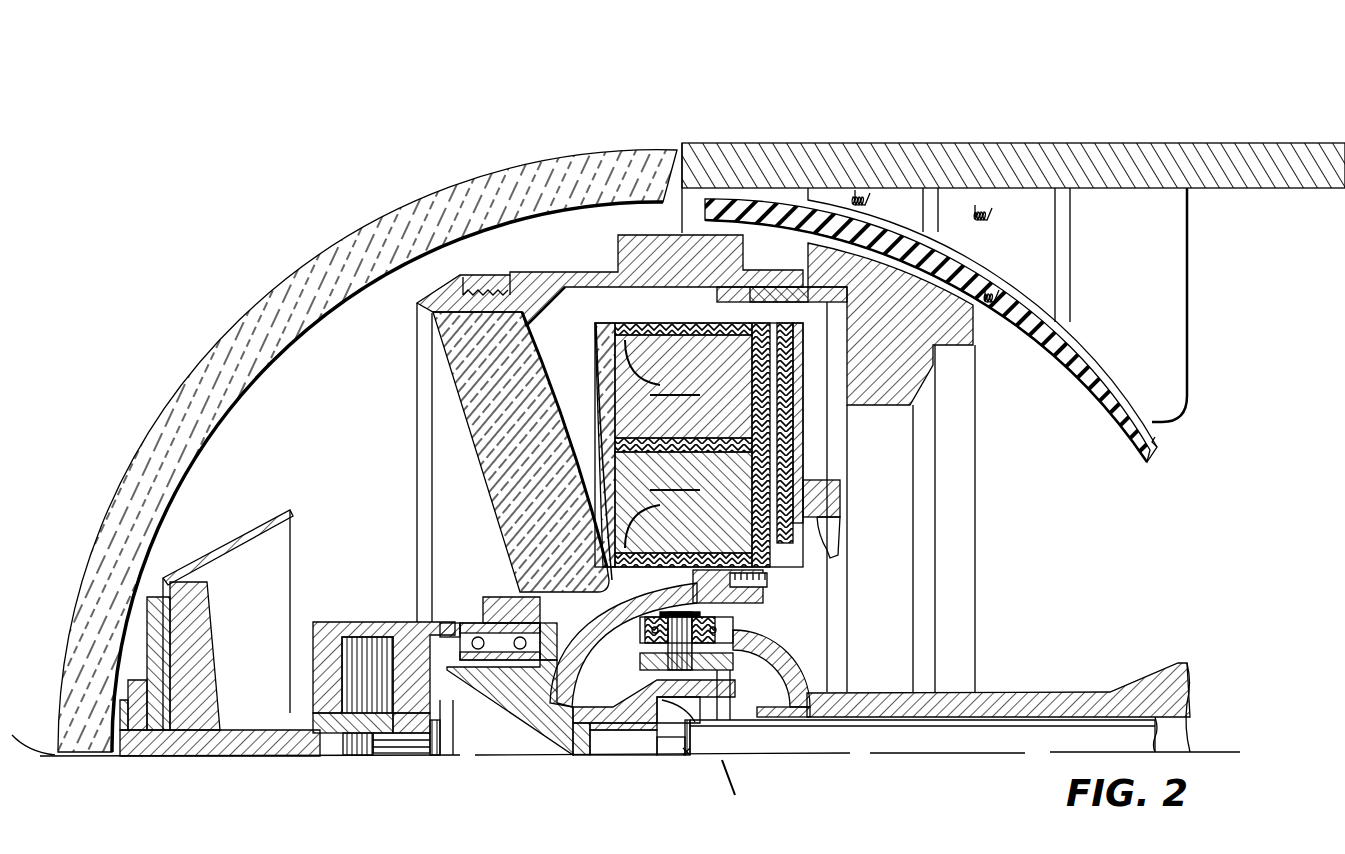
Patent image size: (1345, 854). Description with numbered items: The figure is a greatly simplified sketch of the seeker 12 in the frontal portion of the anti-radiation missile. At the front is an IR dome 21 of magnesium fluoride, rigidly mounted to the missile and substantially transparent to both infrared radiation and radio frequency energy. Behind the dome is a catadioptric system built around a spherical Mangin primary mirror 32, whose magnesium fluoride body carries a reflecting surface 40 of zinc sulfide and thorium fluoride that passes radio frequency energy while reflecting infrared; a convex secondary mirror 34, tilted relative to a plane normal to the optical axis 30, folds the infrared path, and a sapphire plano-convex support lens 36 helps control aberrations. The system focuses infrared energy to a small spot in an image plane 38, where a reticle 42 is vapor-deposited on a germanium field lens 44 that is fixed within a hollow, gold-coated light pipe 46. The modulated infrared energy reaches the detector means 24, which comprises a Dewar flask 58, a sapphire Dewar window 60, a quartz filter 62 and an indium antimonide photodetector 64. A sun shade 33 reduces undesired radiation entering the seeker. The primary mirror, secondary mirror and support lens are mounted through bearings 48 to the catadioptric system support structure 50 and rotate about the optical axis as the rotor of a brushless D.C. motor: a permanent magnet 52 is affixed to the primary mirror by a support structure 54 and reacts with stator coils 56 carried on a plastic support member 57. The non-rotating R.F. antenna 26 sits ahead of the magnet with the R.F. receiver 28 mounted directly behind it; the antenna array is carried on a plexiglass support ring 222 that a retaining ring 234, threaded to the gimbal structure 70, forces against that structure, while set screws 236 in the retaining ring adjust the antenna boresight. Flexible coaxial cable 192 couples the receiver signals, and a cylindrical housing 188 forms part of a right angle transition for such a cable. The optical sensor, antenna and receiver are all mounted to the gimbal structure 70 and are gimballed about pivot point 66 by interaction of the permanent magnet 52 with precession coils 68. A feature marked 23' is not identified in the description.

The seeker 12 is at (368, 182).
The IR dome 21 is at (312, 262).
The optical axis 30 is at (27, 730).
The coils 56 is at (1000, 305).
The plastic support member 57 is at (1110, 420).
The precession coils 68 is at (943, 246).
The support structure 54 is at (618, 252).
The spherical Mangin primary mirror 32 is at (440, 362).
The R.F. receiver 28 is at (784, 312).
The permanent magnet 52 is at (925, 378).
The reflecting surface 40 is at (592, 390).
The air gap 23' is at (581, 437).
The R.F. antenna 26 is at (654, 311).
The cylindrical housing 188 is at (840, 485).
The coaxial cable 192 is at (838, 542).
The sun shade 33 is at (262, 520).
The convex secondary mirror 34 is at (218, 628).
The bearings 48 is at (470, 626).
The plano-convex support lens 36 is at (367, 675).
The catadioptric system support structure 50 is at (524, 699).
The image plane 38 is at (578, 710).
The reticle 42 is at (572, 745).
The field lens 44 is at (600, 748).
The light pipe 46 is at (663, 728).
The sapphire Dewar window 60 is at (678, 750).
The quartz filter 62 is at (690, 733).
The photodetector 64 is at (700, 748).
The pivot point 66 is at (688, 757).
The detector means 24 is at (722, 758).
The support ring 222 is at (622, 600).
The retaining ring 234 is at (765, 595).
The set screw 236 is at (772, 580).
The Dewar flask 58 is at (740, 718).
The gimbal structure 70 is at (945, 690).